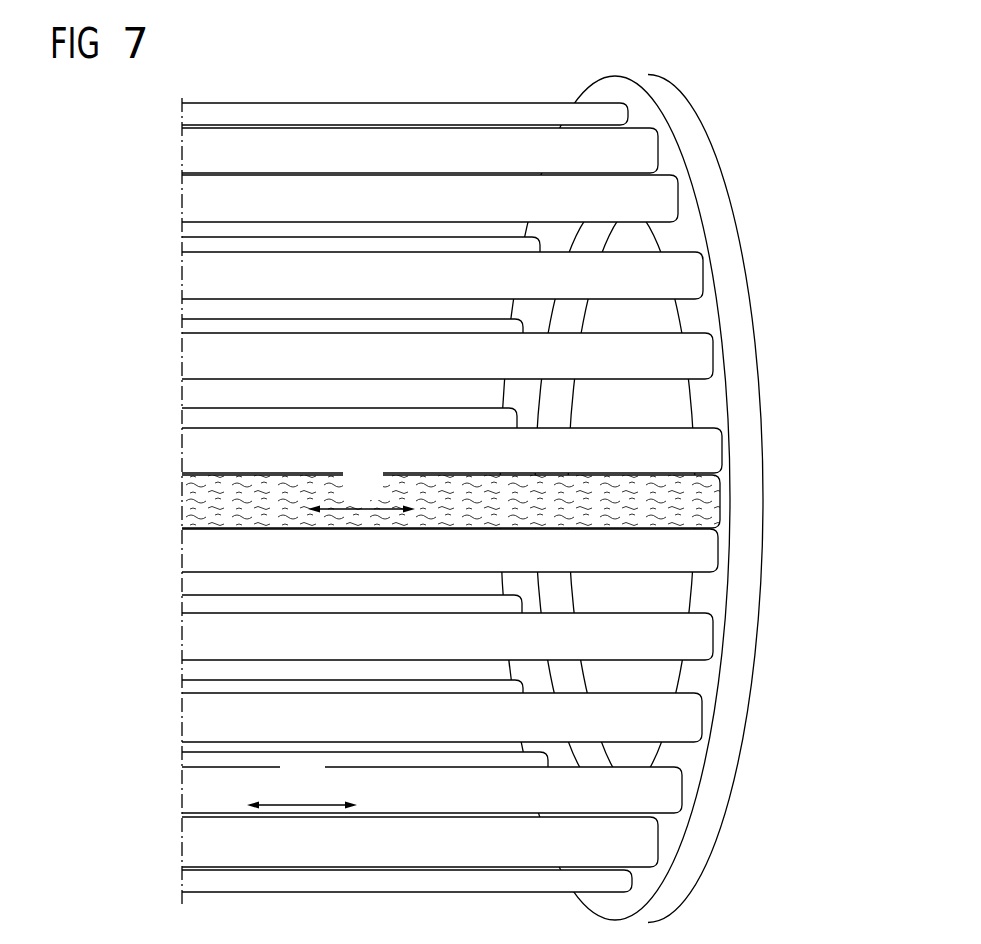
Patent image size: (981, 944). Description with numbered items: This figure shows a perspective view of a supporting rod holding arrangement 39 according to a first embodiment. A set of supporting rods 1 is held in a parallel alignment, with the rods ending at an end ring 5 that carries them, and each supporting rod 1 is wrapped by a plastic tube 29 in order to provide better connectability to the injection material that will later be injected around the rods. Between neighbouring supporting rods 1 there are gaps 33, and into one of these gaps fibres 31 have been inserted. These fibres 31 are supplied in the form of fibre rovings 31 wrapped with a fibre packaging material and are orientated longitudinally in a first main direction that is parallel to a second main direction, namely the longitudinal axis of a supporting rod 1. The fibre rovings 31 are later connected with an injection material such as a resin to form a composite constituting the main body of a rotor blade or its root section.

The supporting rod holding arrangement 39 is at (521, 482).
The short-circuit ring 5 is at (722, 210).
The gaps 33 is at (682, 317).
The supporting rods 1 is at (521, 427).
The plastic tube 29 is at (702, 447).
The fibre rovings 31 is at (700, 502).